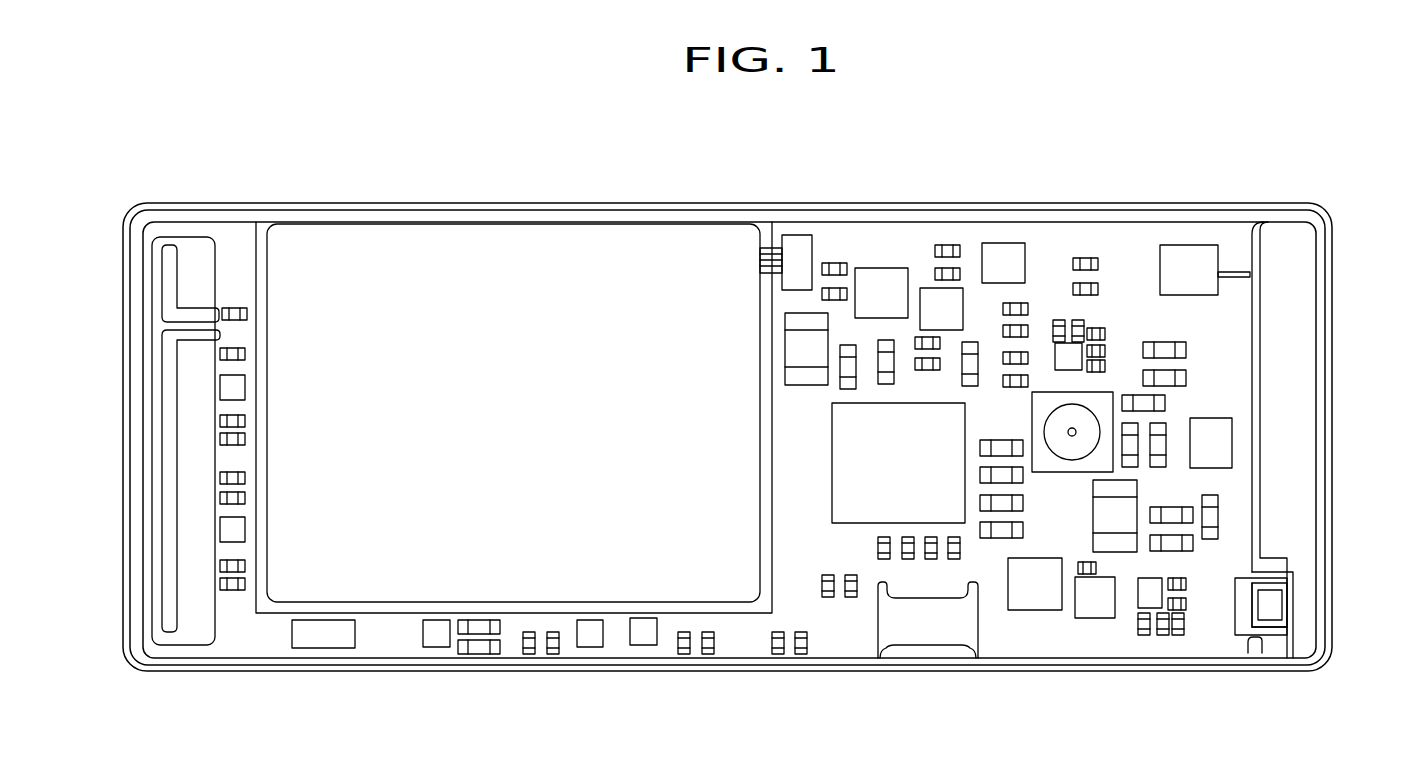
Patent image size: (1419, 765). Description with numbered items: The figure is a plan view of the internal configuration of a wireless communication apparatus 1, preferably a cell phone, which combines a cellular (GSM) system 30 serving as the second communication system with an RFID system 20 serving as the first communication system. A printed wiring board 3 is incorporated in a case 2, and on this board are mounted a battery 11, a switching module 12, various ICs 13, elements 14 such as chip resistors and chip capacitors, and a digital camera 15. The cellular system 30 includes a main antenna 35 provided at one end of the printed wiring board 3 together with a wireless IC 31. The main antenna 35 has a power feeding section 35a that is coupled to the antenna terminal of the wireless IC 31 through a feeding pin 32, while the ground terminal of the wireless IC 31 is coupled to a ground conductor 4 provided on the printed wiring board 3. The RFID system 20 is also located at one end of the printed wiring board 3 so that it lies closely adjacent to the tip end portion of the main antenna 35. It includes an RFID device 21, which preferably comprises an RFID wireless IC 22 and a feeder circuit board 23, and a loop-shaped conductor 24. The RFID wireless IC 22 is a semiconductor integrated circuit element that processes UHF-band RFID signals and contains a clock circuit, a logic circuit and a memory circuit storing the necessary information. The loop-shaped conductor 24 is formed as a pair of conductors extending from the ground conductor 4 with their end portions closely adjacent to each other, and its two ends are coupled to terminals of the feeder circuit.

The wireless communication apparatus 1 is at (786, 142).
The case 2 is at (676, 203).
The printed wiring board 3 is at (1053, 210).
The ground conductor 4 is at (1101, 242).
The battery 11 is at (512, 243).
The switching module 12 is at (832, 430).
The ICs 13 is at (880, 268).
The elements 14 is at (945, 245).
The digital camera 15 is at (1105, 392).
The RFID system 20 is at (1268, 632).
The RFID device 21 is at (1252, 607).
The RFID wireless IC 22 is at (1278, 610).
The feeder circuit board 23 is at (1295, 583).
The loop-shaped conductor 24 is at (1277, 565).
The cellular system 30 is at (1193, 236).
The wireless IC 31 is at (1170, 245).
The feeding pin 32 is at (1232, 272).
The main antenna 35 is at (1324, 440).
The power feeding section 35a is at (1268, 273).